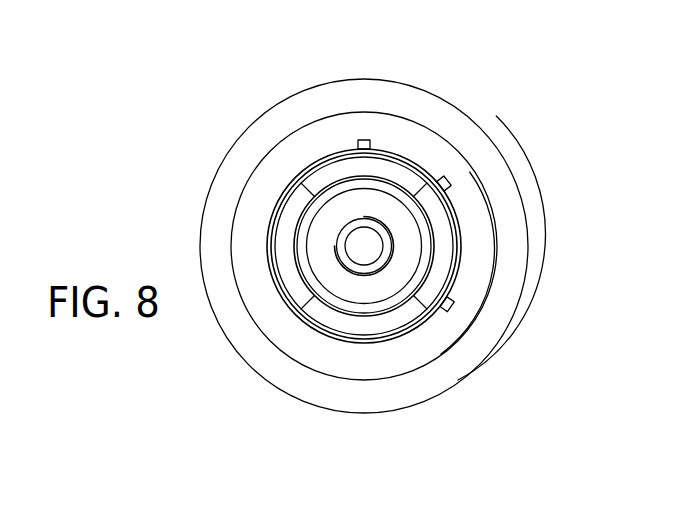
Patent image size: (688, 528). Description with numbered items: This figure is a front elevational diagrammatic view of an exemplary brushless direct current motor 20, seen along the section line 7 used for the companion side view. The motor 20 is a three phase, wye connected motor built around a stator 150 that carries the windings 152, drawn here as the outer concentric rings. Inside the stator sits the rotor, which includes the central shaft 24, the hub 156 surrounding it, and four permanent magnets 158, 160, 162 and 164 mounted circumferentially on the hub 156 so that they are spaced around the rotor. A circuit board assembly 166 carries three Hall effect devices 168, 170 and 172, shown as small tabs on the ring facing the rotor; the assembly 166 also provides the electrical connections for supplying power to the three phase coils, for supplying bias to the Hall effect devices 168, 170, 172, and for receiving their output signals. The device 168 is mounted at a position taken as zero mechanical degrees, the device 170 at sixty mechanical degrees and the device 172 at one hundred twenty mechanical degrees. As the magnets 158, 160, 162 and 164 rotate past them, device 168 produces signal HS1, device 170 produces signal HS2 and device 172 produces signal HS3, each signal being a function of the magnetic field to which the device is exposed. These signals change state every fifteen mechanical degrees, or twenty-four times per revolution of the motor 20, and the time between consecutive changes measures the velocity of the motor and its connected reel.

The section line 7- 7 is at (388, 232).
The brushless direct current motor 20 is at (526, 146).
The shaft 24 is at (363, 247).
The stator 150 is at (240, 338).
The windings 152 is at (297, 343).
The hub 156 is at (340, 287).
The permanent magnet 158 is at (342, 168).
The permanent magnet 160 is at (282, 223).
The permanent magnet 162 is at (397, 330).
The permanent magnet 164 is at (445, 272).
The circuit board assembly 166 is at (476, 224).
The Hall effect device 168 is at (364, 140).
The Hall effect device 170 is at (448, 181).
The Hall effect device 172 is at (453, 306).